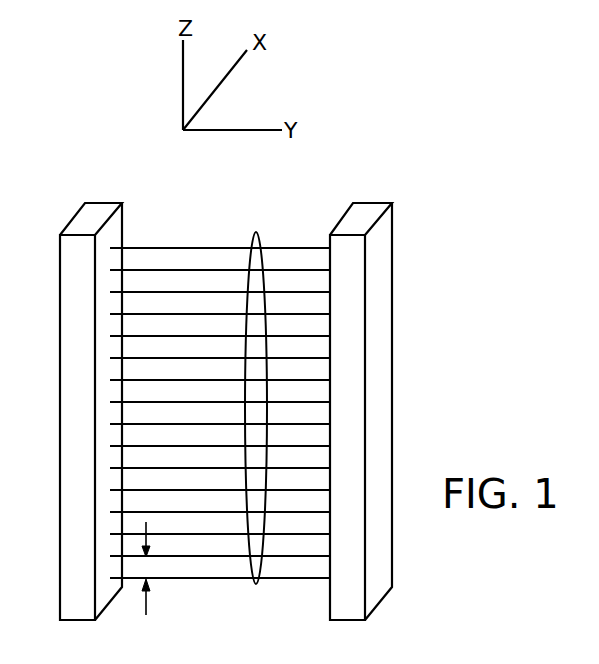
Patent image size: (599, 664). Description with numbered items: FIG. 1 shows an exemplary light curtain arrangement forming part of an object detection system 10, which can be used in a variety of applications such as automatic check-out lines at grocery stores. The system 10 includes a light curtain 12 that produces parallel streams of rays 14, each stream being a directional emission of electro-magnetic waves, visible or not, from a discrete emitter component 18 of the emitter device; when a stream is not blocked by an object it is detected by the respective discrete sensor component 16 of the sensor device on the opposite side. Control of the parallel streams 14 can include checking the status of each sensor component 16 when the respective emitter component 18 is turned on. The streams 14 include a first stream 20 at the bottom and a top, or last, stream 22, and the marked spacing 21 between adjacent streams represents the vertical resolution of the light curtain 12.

The object detection system 10 is at (74, 113).
The light curtain 12 is at (400, 194).
The parallel streams of rays 14 is at (256, 584).
The discrete sensor component 16 is at (392, 390).
The discrete emitter component 18 is at (63, 443).
The first stream 20 is at (205, 583).
The wire spacing 21 is at (148, 582).
The top stream 22 is at (185, 244).